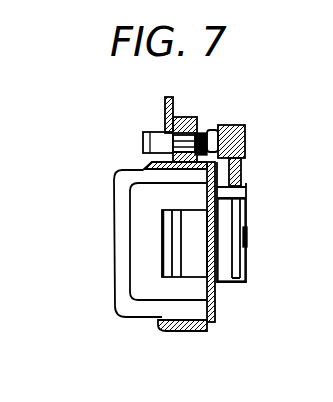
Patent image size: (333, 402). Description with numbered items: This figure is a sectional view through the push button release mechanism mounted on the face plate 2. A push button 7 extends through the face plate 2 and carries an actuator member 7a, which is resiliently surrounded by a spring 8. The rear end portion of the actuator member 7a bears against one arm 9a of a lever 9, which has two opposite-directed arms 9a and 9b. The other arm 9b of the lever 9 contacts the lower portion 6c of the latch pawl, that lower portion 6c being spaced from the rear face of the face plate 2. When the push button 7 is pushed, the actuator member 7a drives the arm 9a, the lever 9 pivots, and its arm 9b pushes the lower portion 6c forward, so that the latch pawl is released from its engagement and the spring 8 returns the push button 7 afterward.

The face plate 2 is at (165, 98).
The push button 7 is at (146, 141).
The actuator member 7a is at (184, 126).
The spring 8 is at (208, 128).
The lever 9 is at (263, 208).
The arm 9a is at (244, 160).
The arm 9b is at (247, 240).
The lower portion 6c is at (238, 275).